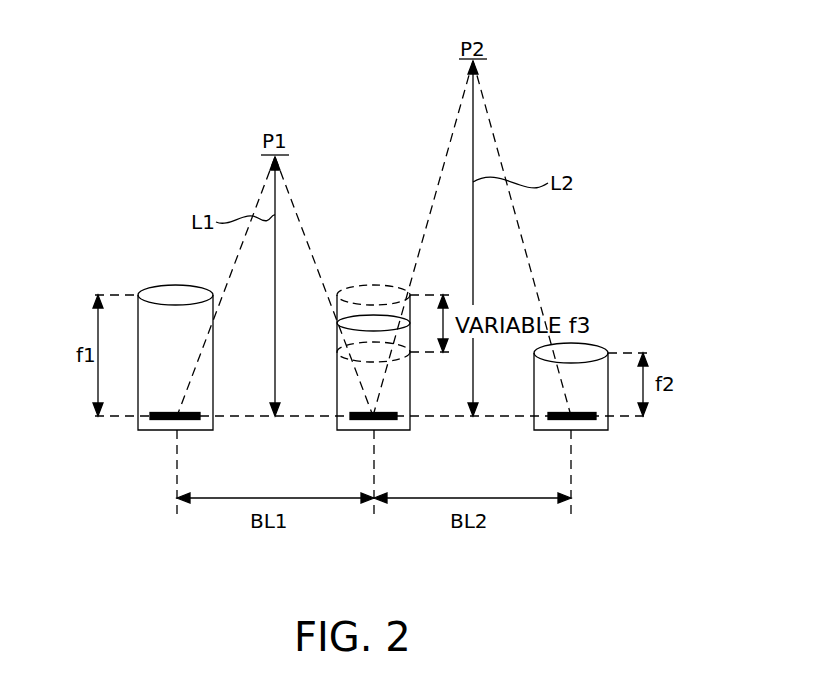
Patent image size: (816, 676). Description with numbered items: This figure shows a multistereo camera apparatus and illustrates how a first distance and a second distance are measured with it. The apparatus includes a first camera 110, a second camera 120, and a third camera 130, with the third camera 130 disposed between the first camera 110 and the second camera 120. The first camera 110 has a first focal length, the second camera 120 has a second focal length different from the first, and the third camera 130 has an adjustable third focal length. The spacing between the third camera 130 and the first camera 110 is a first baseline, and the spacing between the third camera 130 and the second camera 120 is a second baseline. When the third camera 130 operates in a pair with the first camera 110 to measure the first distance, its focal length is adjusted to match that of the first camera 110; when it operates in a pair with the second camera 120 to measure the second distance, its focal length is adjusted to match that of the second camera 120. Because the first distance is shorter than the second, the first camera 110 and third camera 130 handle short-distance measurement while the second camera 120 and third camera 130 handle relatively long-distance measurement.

The first camera 110 is at (145, 430).
The second camera 120 is at (595, 430).
The third camera 130 is at (397, 430).